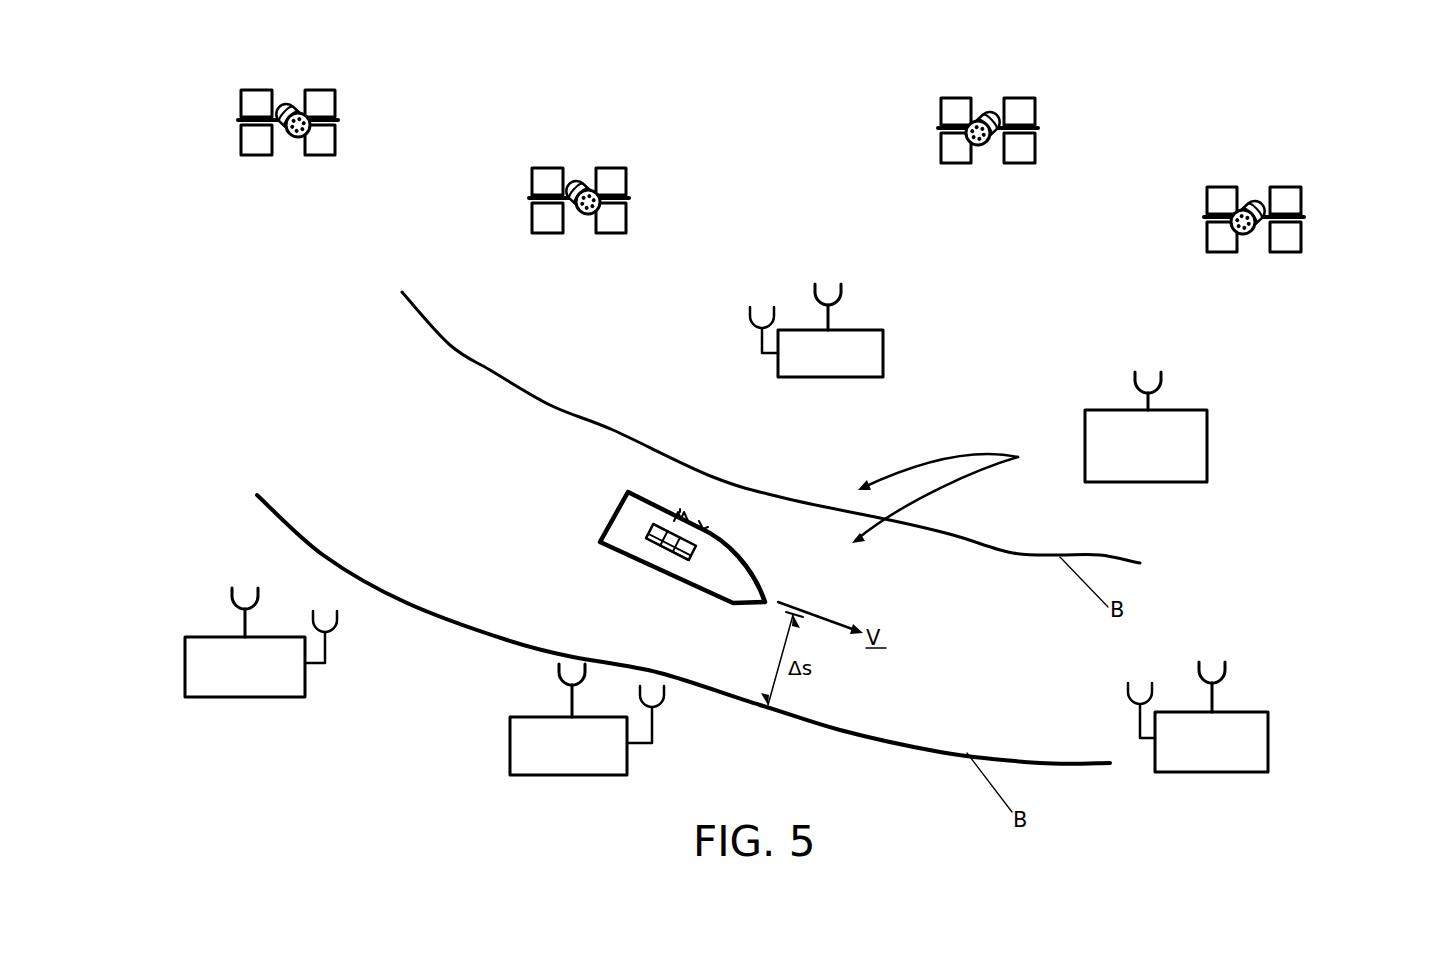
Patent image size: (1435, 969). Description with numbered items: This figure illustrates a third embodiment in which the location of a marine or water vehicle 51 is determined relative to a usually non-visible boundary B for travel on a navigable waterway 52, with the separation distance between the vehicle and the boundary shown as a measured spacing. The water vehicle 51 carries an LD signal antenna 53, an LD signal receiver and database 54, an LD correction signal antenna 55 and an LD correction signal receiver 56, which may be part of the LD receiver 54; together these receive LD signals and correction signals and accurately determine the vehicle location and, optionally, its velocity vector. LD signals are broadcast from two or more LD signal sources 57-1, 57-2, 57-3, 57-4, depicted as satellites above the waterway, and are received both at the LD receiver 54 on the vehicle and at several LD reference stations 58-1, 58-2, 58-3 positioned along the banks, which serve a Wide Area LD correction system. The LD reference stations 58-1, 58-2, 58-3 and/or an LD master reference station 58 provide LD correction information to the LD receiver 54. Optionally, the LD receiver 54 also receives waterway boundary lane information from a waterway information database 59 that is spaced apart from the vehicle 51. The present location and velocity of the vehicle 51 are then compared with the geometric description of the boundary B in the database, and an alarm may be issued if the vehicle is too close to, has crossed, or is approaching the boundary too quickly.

The water vehicle 51 is at (733, 580).
The navigable waterway 52 is at (951, 494).
The LD signal antenna 53 is at (675, 515).
The LD signal receiver and database 54 is at (653, 532).
The LD correction signal antenna 55 is at (702, 525).
The LD correction signal receiver 56 is at (680, 547).
The LD signal source 57-1 is at (312, 95).
The LD signal source 57-2 is at (602, 175).
The LD signal source 57-3 is at (1022, 108).
The LD signal source 57-4 is at (1287, 197).
The LD master reference station 58 is at (592, 767).
The LD reference station 58-1 is at (223, 680).
The LD reference station 58-2 is at (867, 345).
The LD reference station 58-3 is at (1190, 755).
The waterway information database 59 is at (1185, 428).